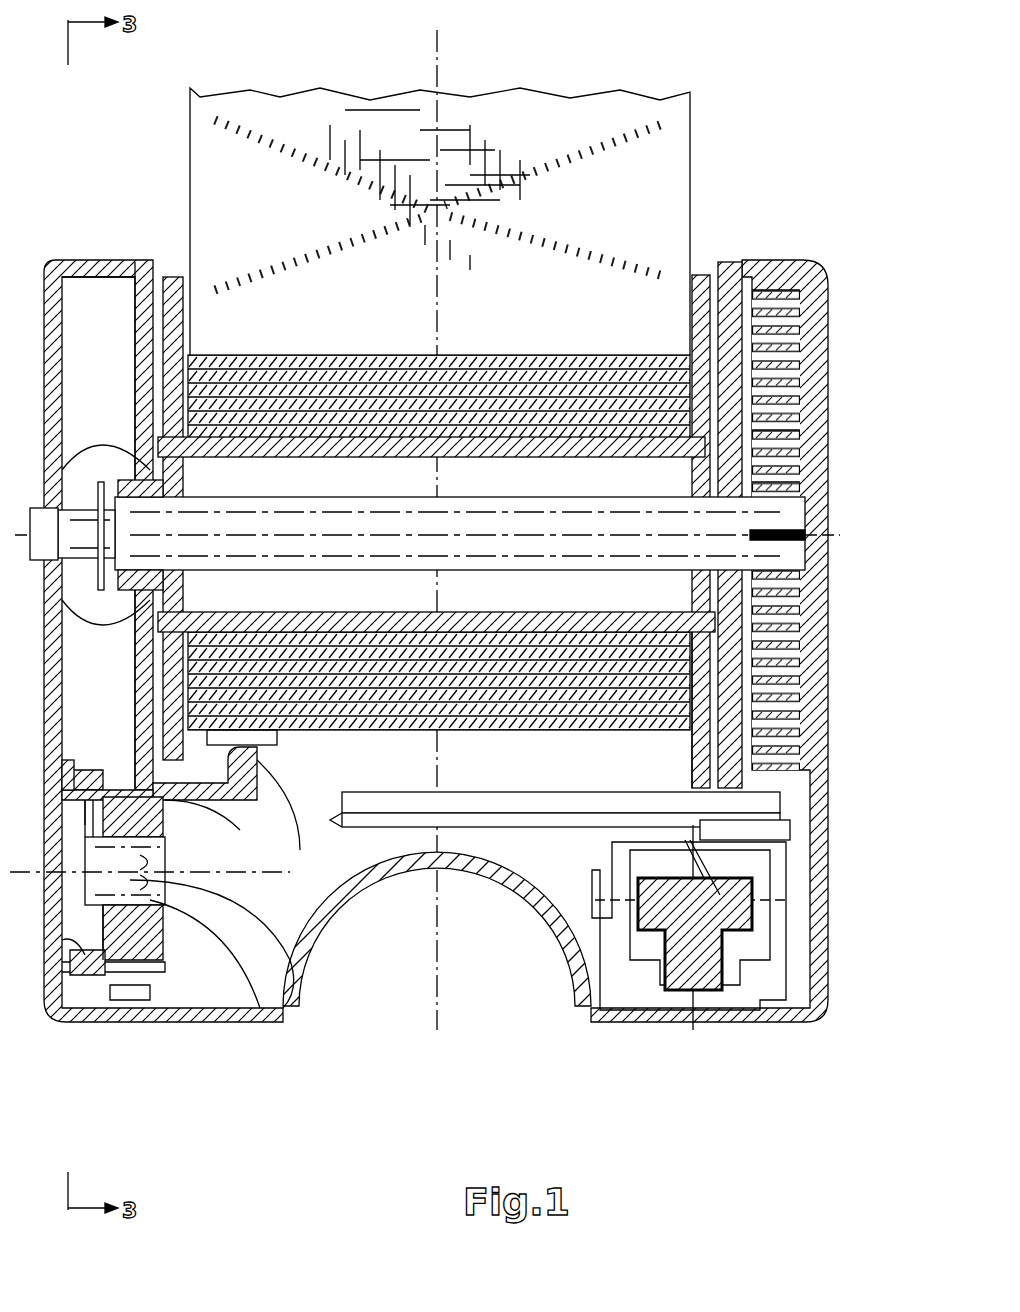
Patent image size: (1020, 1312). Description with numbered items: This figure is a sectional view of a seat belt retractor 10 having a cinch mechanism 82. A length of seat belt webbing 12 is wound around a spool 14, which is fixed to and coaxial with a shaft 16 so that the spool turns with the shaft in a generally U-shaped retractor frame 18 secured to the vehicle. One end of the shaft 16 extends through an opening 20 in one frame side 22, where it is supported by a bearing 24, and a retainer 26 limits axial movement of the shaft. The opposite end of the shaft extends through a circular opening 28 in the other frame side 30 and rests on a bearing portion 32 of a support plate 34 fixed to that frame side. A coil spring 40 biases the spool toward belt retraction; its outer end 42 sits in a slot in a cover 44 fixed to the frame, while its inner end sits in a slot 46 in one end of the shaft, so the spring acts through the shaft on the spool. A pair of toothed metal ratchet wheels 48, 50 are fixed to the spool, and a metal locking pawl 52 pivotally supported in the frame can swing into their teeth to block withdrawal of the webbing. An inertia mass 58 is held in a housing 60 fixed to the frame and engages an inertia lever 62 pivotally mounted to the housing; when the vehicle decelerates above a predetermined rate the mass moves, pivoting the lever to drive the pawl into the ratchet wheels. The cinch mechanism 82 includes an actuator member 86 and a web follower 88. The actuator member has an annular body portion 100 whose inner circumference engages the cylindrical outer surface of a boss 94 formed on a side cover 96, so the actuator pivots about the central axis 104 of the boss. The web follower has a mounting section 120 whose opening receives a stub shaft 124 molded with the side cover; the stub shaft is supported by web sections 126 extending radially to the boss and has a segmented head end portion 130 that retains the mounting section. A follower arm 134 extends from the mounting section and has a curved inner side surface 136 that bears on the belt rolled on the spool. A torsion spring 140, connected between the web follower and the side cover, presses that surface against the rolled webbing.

The seat belt retractor 10 is at (764, 120).
The seat belt webbing 12 is at (352, 122).
The spool 14 is at (540, 612).
The shaft 16 is at (540, 555).
The retractor frame 18 is at (135, 375).
The opening 20 is at (120, 592).
The frame side 22 is at (142, 262).
The bearing 24 is at (130, 478).
The retainer 26 is at (98, 500).
The circular opening 28 is at (700, 605).
The frame side 30 is at (730, 262).
The bearing portion 32 is at (750, 478).
The support plate 34 is at (756, 418).
The coil spring 40 is at (792, 340).
The outer end 42 is at (772, 292).
The cover 44 is at (822, 645).
The slot 46 is at (808, 535).
The ratchet wheel 48 is at (172, 275).
The ratchet wheel 50 is at (706, 275).
The locking pawl 52 is at (487, 795).
The inertia mass 58 is at (745, 918).
The housing 60 is at (790, 890).
The inertia lever 62 is at (775, 870).
The cinch mechanism 82 is at (80, 1060).
The actuator member 86 is at (80, 1010).
The web follower 88 is at (205, 815).
The boss 94 is at (70, 805).
The side cover 96 is at (55, 262).
The annular body portion 100 is at (70, 788).
The central axis 104 is at (315, 945).
The mounting section 120 is at (130, 955).
The stub shaft 124 is at (290, 962).
The web sections 126 is at (80, 935).
The segmented head end portion 130 is at (200, 965).
The follower arm 134 is at (160, 778).
The curved inner side surface 136 is at (265, 745).
The torsion spring 140 is at (115, 1000).